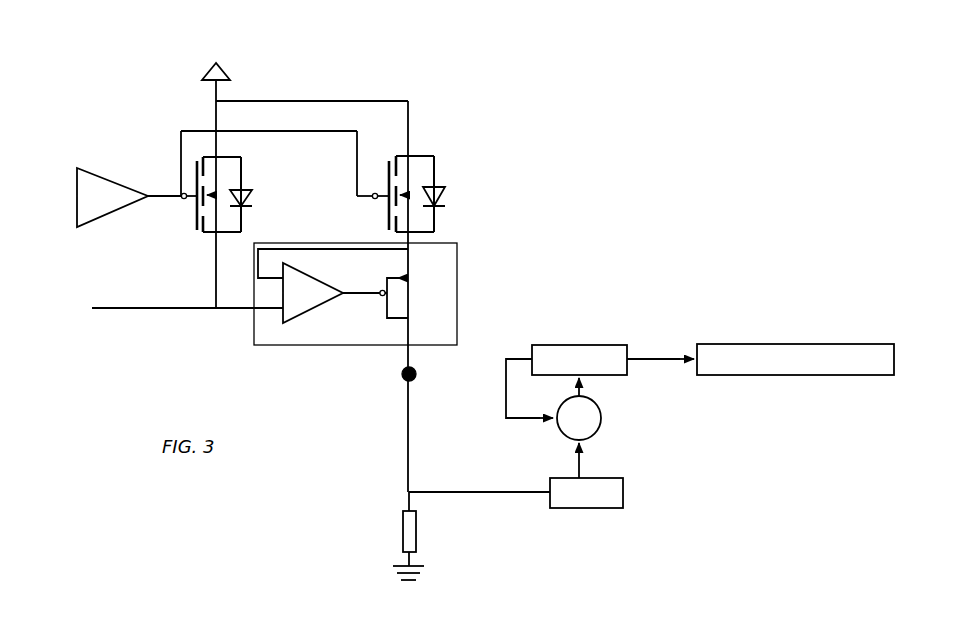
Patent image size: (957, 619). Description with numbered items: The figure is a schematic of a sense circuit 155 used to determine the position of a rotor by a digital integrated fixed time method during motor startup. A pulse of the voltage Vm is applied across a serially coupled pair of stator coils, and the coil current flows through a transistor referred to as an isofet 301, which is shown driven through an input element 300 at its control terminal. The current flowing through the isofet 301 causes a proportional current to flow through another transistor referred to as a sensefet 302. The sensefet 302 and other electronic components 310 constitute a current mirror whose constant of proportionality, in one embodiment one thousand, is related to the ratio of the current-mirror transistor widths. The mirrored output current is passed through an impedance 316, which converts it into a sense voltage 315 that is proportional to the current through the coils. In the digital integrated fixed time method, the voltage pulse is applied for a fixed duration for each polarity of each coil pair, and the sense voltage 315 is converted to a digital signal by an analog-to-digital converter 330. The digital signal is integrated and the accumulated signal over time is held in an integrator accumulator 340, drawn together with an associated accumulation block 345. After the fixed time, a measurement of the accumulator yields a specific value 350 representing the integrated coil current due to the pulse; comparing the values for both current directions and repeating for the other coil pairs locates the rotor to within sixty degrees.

The sense circuit 155 is at (628, 170).
The buffer / driver 300 is at (99, 190).
The isofet 301 is at (207, 148).
The sensefet 302 is at (426, 142).
The other electronic components 310 is at (463, 257).
The sense voltage 315 is at (427, 367).
The impedance 316 is at (425, 531).
The analog-to-digital converter 330 is at (633, 491).
The integrator accumulator 340 is at (609, 415).
The integrating accumulator 345 is at (625, 333).
The specific value 350 is at (815, 339).